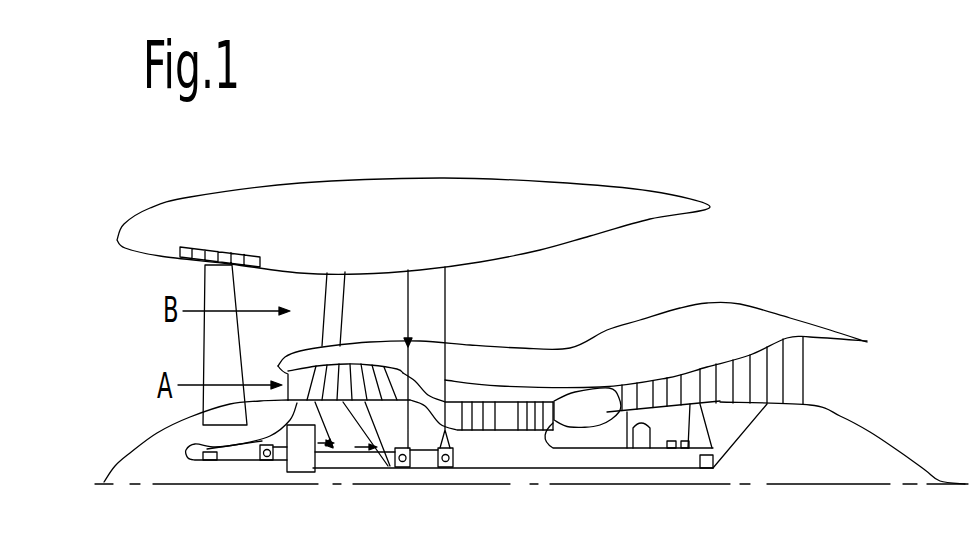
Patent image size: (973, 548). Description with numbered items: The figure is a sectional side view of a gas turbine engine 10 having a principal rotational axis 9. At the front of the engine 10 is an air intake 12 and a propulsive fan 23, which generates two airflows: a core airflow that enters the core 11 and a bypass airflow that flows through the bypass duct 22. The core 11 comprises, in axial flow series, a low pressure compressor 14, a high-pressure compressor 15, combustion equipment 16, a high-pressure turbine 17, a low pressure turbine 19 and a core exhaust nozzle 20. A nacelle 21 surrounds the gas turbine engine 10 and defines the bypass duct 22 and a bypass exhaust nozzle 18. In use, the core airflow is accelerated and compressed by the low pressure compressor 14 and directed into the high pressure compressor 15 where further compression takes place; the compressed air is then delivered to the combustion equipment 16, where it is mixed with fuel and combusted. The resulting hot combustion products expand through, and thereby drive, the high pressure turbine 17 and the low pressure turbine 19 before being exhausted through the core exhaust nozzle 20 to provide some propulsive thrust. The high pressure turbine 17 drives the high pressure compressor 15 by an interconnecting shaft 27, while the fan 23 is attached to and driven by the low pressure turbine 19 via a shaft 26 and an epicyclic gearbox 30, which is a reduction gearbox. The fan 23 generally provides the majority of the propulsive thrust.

The principal rotational axis 9 is at (768, 486).
The gas turbine engine 10 is at (402, 200).
The core 11 is at (567, 373).
The air intake 12 is at (133, 298).
The low pressure compressor 14 is at (372, 372).
The high-pressure compressor 15 is at (505, 410).
The combustion equipment 16 is at (590, 413).
The high-pressure turbine 17 is at (644, 393).
The bypass exhaust nozzle 18 is at (765, 253).
The low pressure turbine 19 is at (775, 360).
The core exhaust nozzle 20 is at (843, 384).
The nacelle 21 is at (433, 198).
The bypass duct 22 is at (687, 266).
The propulsive fan 23 is at (205, 348).
The shaft 26 is at (507, 468).
The interconnecting shaft 27 is at (545, 452).
The epicyclic gearbox 30 is at (300, 452).